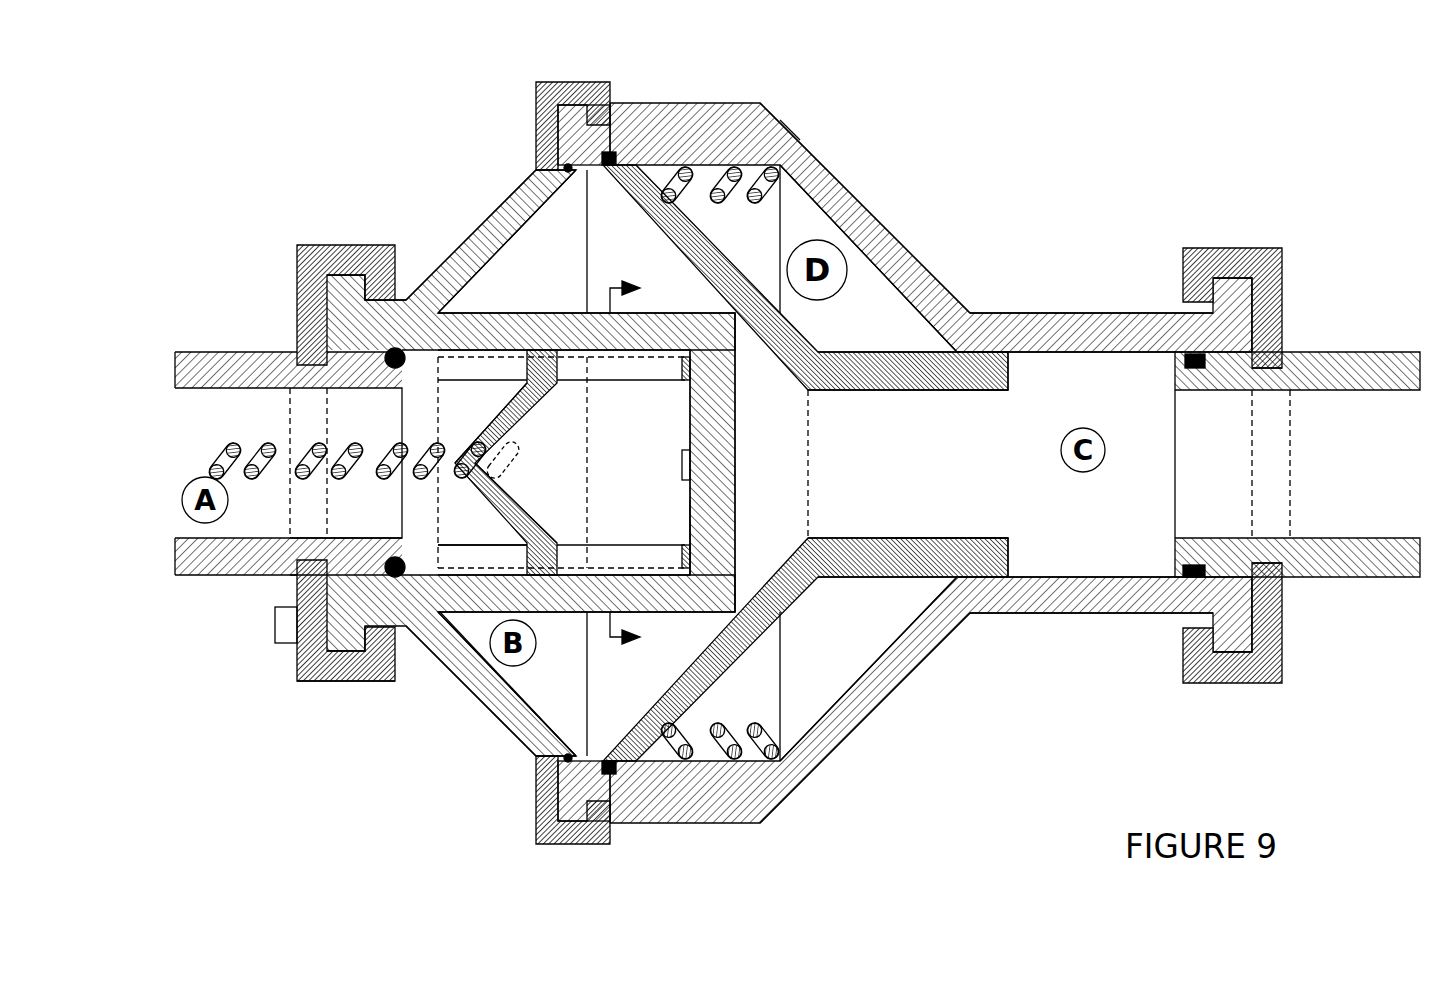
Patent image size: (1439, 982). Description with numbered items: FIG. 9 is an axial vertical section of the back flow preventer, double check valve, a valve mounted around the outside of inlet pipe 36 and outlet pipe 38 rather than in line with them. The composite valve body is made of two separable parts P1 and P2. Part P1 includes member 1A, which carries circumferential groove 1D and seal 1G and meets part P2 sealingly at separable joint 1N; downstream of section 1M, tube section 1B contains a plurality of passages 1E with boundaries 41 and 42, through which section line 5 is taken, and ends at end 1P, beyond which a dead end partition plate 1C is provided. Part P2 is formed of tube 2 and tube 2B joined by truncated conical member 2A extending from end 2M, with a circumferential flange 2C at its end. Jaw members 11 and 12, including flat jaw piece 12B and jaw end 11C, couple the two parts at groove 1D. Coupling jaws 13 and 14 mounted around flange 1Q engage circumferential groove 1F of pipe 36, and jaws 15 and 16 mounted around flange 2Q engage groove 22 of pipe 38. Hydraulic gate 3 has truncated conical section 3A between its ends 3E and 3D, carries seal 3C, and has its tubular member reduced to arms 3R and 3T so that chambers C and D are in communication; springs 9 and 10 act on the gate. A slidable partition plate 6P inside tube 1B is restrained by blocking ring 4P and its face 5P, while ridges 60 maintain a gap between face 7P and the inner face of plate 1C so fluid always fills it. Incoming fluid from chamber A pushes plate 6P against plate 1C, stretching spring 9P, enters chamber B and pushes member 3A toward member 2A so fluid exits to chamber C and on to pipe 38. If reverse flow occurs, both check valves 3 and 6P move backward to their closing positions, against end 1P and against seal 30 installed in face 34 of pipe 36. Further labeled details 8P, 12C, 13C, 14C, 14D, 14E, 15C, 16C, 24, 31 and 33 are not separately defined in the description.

The member 1A is at (462, 660).
The tube section 1B is at (588, 661).
The partition plate 1C is at (700, 530).
The circumferential groove 1D is at (512, 200).
The passage 1E is at (513, 390).
The circumferential groove 1F is at (288, 575).
The seal 1G is at (580, 733).
The section 1M is at (437, 320).
The separable joint 1N is at (580, 172).
The end 1P is at (742, 317).
The flange 1Q is at (297, 335).
The tube 2 is at (1045, 330).
The truncated conical member 2A is at (937, 280).
The tube 2B is at (748, 105).
The circumferential flange 2C is at (580, 110).
The end of truncated conical member 2M is at (1050, 316).
The flange 2Q is at (1227, 293).
The hydraulic gate 3 is at (789, 557).
The truncated conical section 3A is at (670, 680).
The seal 3C is at (607, 177).
The end 3D is at (628, 160).
The end 3E is at (817, 350).
The arm 3R is at (968, 390).
The arm 3T is at (880, 538).
The blocking ring 4P is at (562, 525).
The section line 5 is at (637, 462).
The face 5P is at (557, 398).
The slidable partition plate 6P is at (517, 418).
The face 7P is at (575, 513).
The chamber bottom guide 8P is at (515, 558).
The spring 9 is at (687, 193).
The spring 9P is at (211, 468).
The spring 10 is at (700, 725).
The jaw member 11 is at (559, 82).
The end 11C is at (537, 122).
The jaw member 12 is at (535, 820).
The flat jaw piece 12B is at (605, 845).
The lower cap seat 12C is at (538, 742).
The coupling jaw 13 is at (305, 246).
The inlet flange cavity 13C is at (307, 370).
The coupling jaw 14 is at (312, 682).
The inlet pipe lower wall 14C is at (313, 560).
The flange lug 14D is at (297, 643).
The flange base 14E is at (313, 680).
The coupling jaw 15 is at (1220, 248).
The outlet flange underside 15C is at (1265, 370).
The coupling jaw 16 is at (1248, 683).
The outlet pipe bore line 16C is at (1258, 560).
The circumferential groove 22 is at (1288, 356).
The lower outlet seal 24 is at (1177, 565).
The seal 30 is at (390, 565).
The upper outlet seal 31 is at (1180, 388).
The valve body shoulder 33 is at (402, 308).
The face 34 is at (403, 375).
The pipe 36 is at (197, 352).
The pipe 38 is at (1328, 353).
The passage boundary 41 is at (618, 360).
The passage boundary 42 is at (622, 568).
The ridge 60 is at (682, 465).
The valve body part P1 is at (500, 703).
The valve body part P2 is at (783, 132).